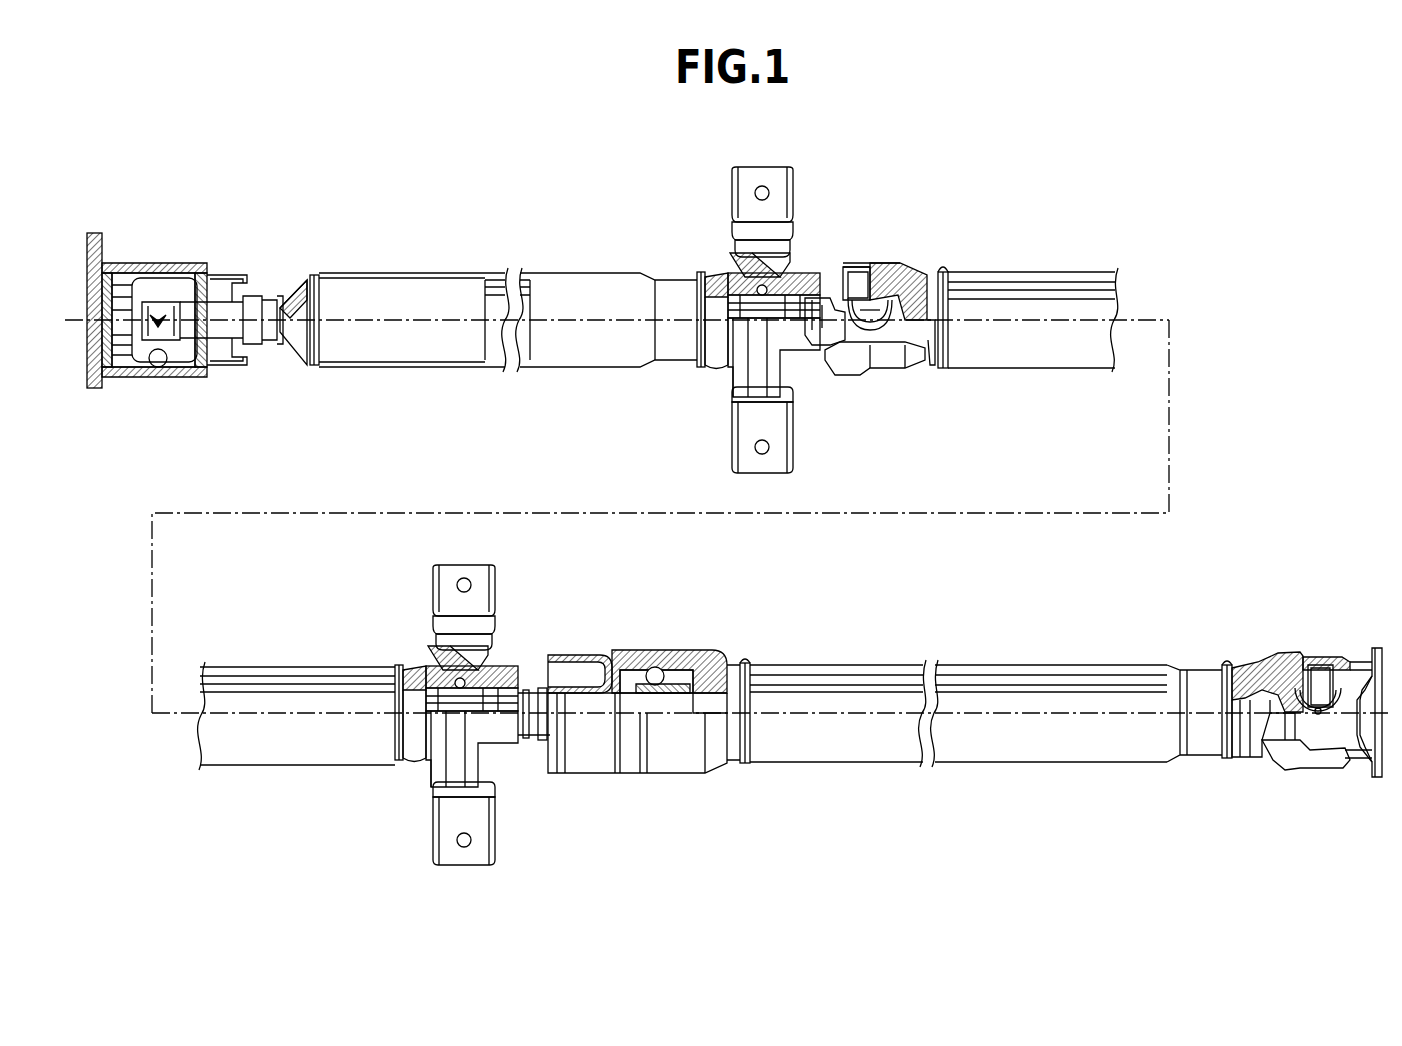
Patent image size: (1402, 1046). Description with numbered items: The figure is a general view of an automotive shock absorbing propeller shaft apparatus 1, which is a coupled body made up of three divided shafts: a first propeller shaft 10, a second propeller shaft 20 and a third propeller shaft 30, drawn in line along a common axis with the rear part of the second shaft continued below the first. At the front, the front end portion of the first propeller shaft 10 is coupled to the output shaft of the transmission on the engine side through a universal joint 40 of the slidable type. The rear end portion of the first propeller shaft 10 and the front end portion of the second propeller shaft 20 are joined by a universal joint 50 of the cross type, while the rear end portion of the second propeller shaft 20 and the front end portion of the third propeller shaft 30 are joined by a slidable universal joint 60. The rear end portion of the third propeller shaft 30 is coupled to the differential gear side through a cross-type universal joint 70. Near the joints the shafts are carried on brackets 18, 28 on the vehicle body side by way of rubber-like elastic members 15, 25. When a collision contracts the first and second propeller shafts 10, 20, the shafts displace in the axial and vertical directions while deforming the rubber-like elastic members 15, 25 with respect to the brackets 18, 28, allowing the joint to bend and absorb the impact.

The automotive shock absorbing propeller shaft apparatus 1 is at (1015, 184).
The first propeller shaft 10 is at (432, 272).
The rubber-like elastic member 15 is at (735, 270).
The bracket 18 is at (748, 182).
The second propeller shaft 20 is at (1075, 270).
The rubber-like elastic member 25 is at (430, 658).
The bracket 28 is at (450, 575).
The third propeller shaft 30 is at (1006, 662).
The universal joint (slidable joint) 40 is at (165, 262).
The universal joint (cross joint) 50 is at (897, 260).
The universal joint (slidable joint) 60 is at (668, 650).
The universal joint (cross joint) 70 is at (1295, 650).